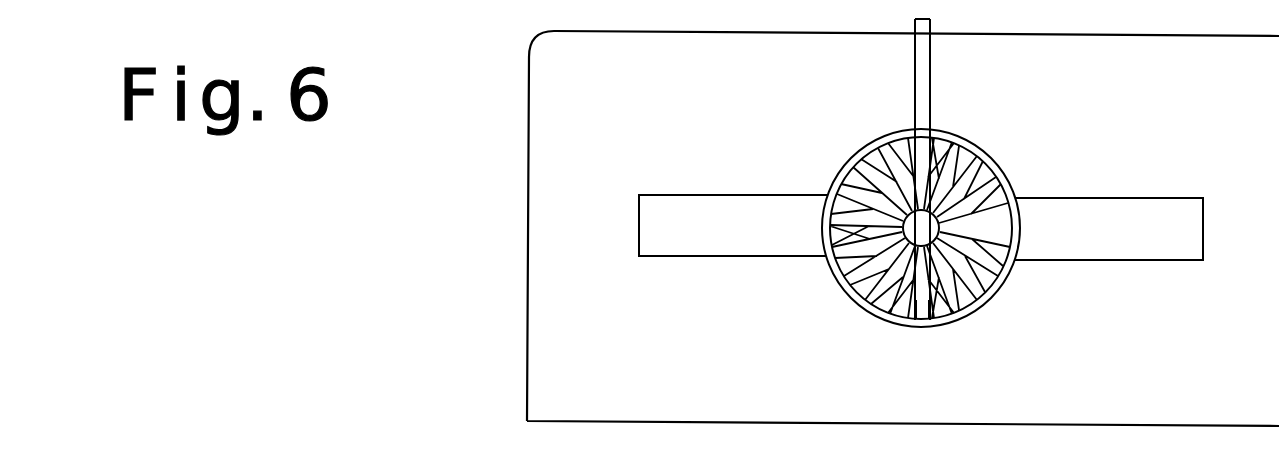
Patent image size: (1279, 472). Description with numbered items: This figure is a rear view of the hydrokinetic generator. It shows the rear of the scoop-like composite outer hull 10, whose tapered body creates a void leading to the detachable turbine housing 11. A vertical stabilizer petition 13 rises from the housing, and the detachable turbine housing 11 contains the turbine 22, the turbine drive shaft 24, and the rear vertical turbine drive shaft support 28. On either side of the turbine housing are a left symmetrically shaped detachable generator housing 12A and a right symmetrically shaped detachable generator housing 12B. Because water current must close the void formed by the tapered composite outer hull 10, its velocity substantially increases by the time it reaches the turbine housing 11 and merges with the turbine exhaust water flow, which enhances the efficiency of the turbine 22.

The composite outer hull 10 is at (1263, 78).
The detachable turbine housing 11 is at (999, 184).
The vertical stabilizer petition 13 is at (925, 57).
The left detachable generator housing 12A is at (1141, 244).
The right detachable generator housing 12B is at (739, 240).
The turbine 22 is at (988, 240).
The turbine drive shaft 24 is at (935, 238).
The rear vertical turbine drive shaft support 28 is at (920, 310).